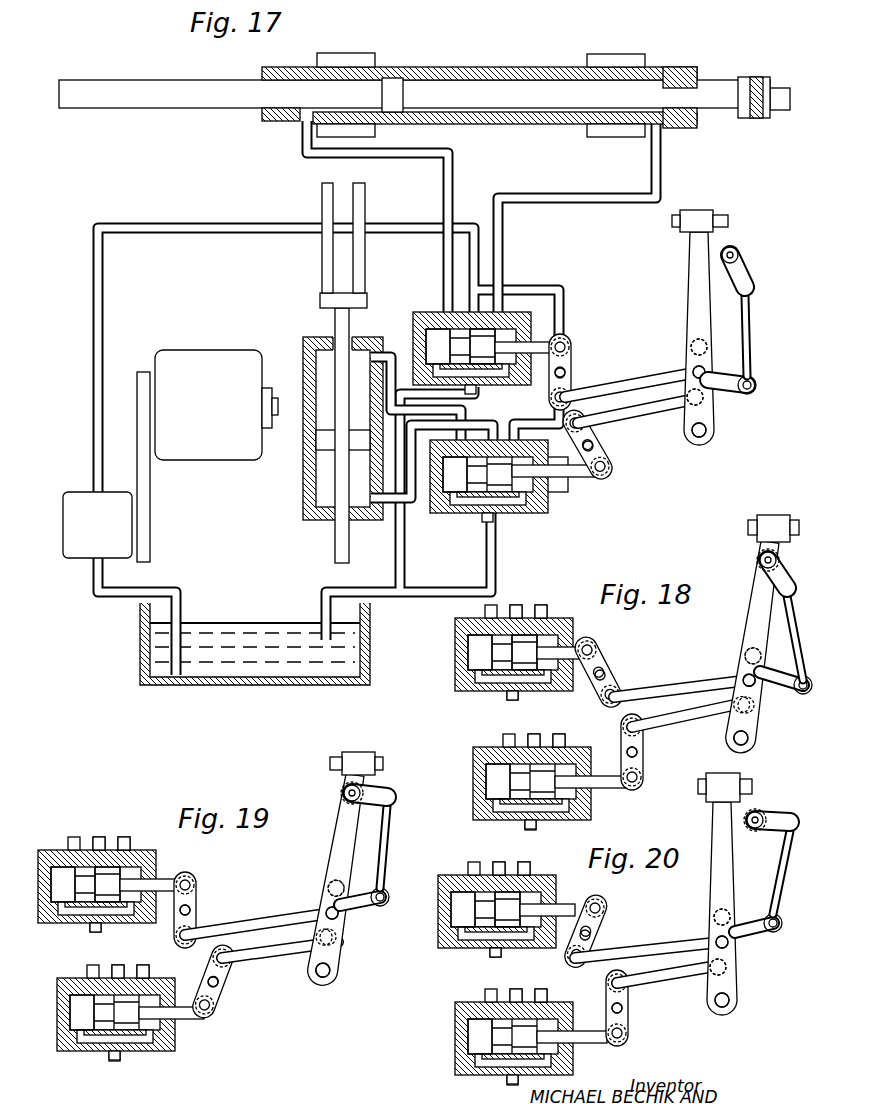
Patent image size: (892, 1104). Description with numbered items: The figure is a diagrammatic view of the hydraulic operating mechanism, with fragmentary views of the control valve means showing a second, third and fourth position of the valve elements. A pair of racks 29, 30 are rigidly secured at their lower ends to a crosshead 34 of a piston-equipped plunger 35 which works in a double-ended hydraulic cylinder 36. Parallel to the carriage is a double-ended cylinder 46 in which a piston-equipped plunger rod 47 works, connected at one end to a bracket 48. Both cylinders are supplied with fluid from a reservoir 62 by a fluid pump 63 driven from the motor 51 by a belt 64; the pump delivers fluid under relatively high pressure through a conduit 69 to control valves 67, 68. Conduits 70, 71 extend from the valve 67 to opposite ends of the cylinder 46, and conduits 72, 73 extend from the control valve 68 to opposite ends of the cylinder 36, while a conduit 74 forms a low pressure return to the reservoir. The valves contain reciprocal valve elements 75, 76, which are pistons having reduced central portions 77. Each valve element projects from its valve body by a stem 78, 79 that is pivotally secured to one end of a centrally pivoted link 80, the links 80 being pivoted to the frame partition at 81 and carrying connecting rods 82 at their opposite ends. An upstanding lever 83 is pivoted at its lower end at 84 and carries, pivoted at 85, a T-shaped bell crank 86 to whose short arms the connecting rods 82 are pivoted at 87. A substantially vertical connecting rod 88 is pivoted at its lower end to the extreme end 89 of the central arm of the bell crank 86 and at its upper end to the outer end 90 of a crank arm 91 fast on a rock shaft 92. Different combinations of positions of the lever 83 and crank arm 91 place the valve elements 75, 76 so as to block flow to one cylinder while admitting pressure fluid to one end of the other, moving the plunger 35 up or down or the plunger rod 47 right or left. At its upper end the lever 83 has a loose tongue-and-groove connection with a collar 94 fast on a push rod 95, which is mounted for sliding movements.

In FIG. 17, the rack 29 is at (365, 198).
In FIG. 17, the rack 30 is at (322, 198).
In FIG. 17, the crosshead 34 is at (319, 297).
In FIG. 17, the piston-equipped plunger 35 is at (334, 318).
In FIG. 17, the double-ended hydraulic cylinder 36 is at (304, 483).
In FIG. 17, the double-ended cylinder 46 is at (480, 66).
In FIG. 17, the piston-equipped plunger rod 47 is at (177, 100).
In FIG. 17, the bracket 48 is at (757, 76).
In FIG. 17, the motor 51 is at (216, 405).
In FIG. 17, the reservoir 62 is at (252, 680).
In FIG. 17, the fluid pump 63 is at (97, 525).
In FIG. 17, the belt 64 is at (151, 483).
In FIG. 17, the control valve 67 is at (415, 311).
In FIG. 18, the control valve 67 is at (457, 652).
In FIG. 19, the control valve 67 is at (55, 852).
In FIG. 20, the control valve 67 is at (445, 880).
In FIG. 17, the control valve 68 is at (531, 506).
In FIG. 18, the control valve 68 is at (472, 766).
In FIG. 19, the control valve 68 is at (58, 1028).
In FIG. 20, the control valve 68 is at (455, 1018).
In FIG. 17, the conduit 69 is at (104, 322).
In FIG. 18, the conduit 69 is at (516, 606).
In FIG. 19, the conduit 69 is at (99, 838).
In FIG. 20, the conduit 69 is at (500, 868).
In FIG. 17, the conduit 70 is at (456, 186).
In FIG. 18, the conduit 70 is at (487, 608).
In FIG. 19, the conduit 70 is at (74, 838).
In FIG. 20, the conduit 70 is at (473, 870).
In FIG. 17, the conduit 71 is at (578, 196).
In FIG. 18, the conduit 71 is at (548, 610).
In FIG. 19, the conduit 71 is at (125, 838).
In FIG. 20, the conduit 71 is at (525, 870).
In FIG. 17, the conduit 72 is at (394, 355).
In FIG. 18, the conduit 72 is at (504, 738).
In FIG. 19, the conduit 72 is at (92, 966).
In FIG. 20, the conduit 72 is at (487, 992).
In FIG. 17, the conduit 73 is at (488, 406).
In FIG. 18, the conduit 73 is at (558, 740).
In FIG. 19, the conduit 73 is at (143, 976).
In FIG. 20, the conduit 73 is at (541, 990).
In FIG. 17, the conduit 74 is at (394, 550).
In FIG. 18, the conduit 74 is at (510, 701).
In FIG. 19, the conduit 74 is at (103, 929).
In FIG. 20, the conduit 74 is at (490, 956).
In FIG. 17, the valve element 75 is at (442, 346).
In FIG. 18, the valve element 75 is at (475, 662).
In FIG. 19, the valve element 75 is at (72, 890).
In FIG. 20, the valve element 75 is at (478, 910).
In FIG. 17, the valve element 76 is at (526, 486).
In FIG. 18, the valve element 76 is at (498, 777).
In FIG. 19, the valve element 76 is at (136, 1026).
In FIG. 20, the valve element 76 is at (490, 1028).
In FIG. 17, the reduced central portion 77 is at (519, 410).
In FIG. 18, the reduced central portion 77 is at (533, 717).
In FIG. 19, the reduced central portion 77 is at (117, 948).
In FIG. 20, the reduced central portion 77 is at (516, 973).
In FIG. 17, the valve stem 78 is at (545, 340).
In FIG. 18, the valve stem 78 is at (562, 645).
In FIG. 19, the valve stem 78 is at (165, 878).
In FIG. 20, the valve stem 78 is at (568, 905).
In FIG. 17, the valve stem 79 is at (569, 473).
In FIG. 18, the valve stem 79 is at (612, 784).
In FIG. 19, the valve stem 79 is at (186, 1016).
In FIG. 20, the valve stem 79 is at (585, 1028).
In FIG. 17, the link 80 is at (573, 350).
In FIG. 18, the link 80 is at (599, 658).
In FIG. 19, the link 80 is at (196, 888).
In FIG. 20, the link 80 is at (601, 910).
In FIG. 17, the pivot 81 is at (571, 373).
In FIG. 18, the pivot 81 is at (606, 675).
In FIG. 19, the pivot 81 is at (196, 910).
In FIG. 20, the pivot 81 is at (596, 934).
In FIG. 17, the connecting rod 82 is at (634, 374).
In FIG. 18, the connecting rod 82 is at (693, 733).
In FIG. 19, the connecting rod 82 is at (258, 904).
In FIG. 20, the connecting rod 82 is at (650, 975).
In FIG. 17, the lever 83 is at (690, 288).
In FIG. 18, the lever 83 is at (760, 608).
In FIG. 19, the lever 83 is at (340, 828).
In FIG. 20, the lever 83 is at (712, 873).
In FIG. 17, the pivot 84 is at (699, 447).
In FIG. 18, the pivot 84 is at (735, 742).
In FIG. 19, the pivot 84 is at (332, 975).
In FIG. 20, the pivot 84 is at (740, 1000).
In FIG. 17, the pivot 85 is at (692, 375).
In FIG. 18, the pivot 85 is at (744, 681).
In FIG. 19, the pivot 85 is at (325, 913).
In FIG. 20, the pivot 85 is at (715, 940).
In FIG. 17, the T-shaped bell crank 86 is at (730, 394).
In FIG. 18, the T-shaped bell crank 86 is at (777, 692).
In FIG. 19, the T-shaped bell crank 86 is at (356, 912).
In FIG. 20, the T-shaped bell crank 86 is at (757, 940).
In FIG. 17, the pivot 87 is at (690, 344).
In FIG. 18, the pivot 87 is at (742, 656).
In FIG. 19, the pivot 87 is at (326, 880).
In FIG. 20, the pivot 87 is at (712, 915).
In FIG. 17, the connecting rod 88 is at (752, 332).
In FIG. 18, the connecting rod 88 is at (794, 638).
In FIG. 19, the connecting rod 88 is at (391, 830).
In FIG. 20, the connecting rod 88 is at (784, 868).
In FIG. 17, the extreme end 89 is at (758, 386).
In FIG. 18, the extreme end 89 is at (802, 696).
In FIG. 19, the extreme end 89 is at (389, 899).
In FIG. 20, the extreme end 89 is at (779, 917).
In FIG. 17, the outer end 90 is at (756, 287).
In FIG. 18, the outer end 90 is at (789, 583).
In FIG. 19, the outer end 90 is at (392, 794).
In FIG. 20, the outer end 90 is at (795, 810).
In FIG. 17, the crank arm 91 is at (748, 268).
In FIG. 18, the crank arm 91 is at (765, 567).
In FIG. 19, the crank arm 91 is at (372, 788).
In FIG. 20, the crank arm 91 is at (775, 830).
In FIG. 17, the rock shaft 92 is at (740, 250).
In FIG. 18, the rock shaft 92 is at (760, 558).
In FIG. 19, the rock shaft 92 is at (343, 792).
In FIG. 20, the rock shaft 92 is at (757, 812).
In FIG. 17, the collar 94 is at (701, 212).
In FIG. 18, the collar 94 is at (773, 515).
In FIG. 19, the collar 94 is at (358, 752).
In FIG. 20, the collar 94 is at (740, 786).
In FIG. 17, the push rod 95 is at (729, 222).
In FIG. 18, the push rod 95 is at (748, 526).
In FIG. 19, the push rod 95 is at (337, 760).
In FIG. 20, the push rod 95 is at (753, 788).